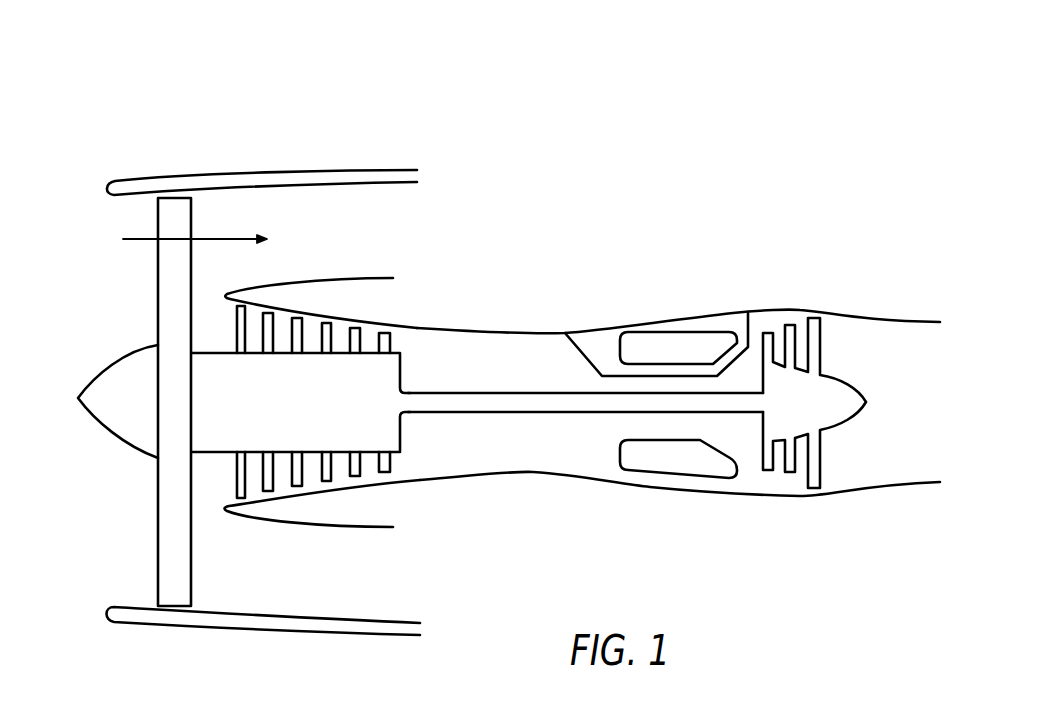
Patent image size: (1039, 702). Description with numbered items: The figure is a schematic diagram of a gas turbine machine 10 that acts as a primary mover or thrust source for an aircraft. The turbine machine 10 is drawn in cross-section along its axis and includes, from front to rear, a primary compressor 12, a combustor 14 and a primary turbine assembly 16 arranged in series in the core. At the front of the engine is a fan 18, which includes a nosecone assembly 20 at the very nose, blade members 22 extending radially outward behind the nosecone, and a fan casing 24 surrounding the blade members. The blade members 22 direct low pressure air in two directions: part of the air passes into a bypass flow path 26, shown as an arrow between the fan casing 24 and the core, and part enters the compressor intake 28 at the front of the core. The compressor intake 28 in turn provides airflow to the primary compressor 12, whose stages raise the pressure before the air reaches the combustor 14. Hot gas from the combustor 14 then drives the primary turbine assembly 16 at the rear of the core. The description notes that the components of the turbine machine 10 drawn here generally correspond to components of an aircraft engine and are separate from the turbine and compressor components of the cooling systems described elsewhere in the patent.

The gas turbine machine 10 is at (677, 203).
The primary compressor 12 is at (333, 390).
The combustor 14 is at (667, 347).
The primary turbine assembly 16 is at (805, 400).
The fan 18 is at (92, 271).
The nosecone assembly 20 is at (117, 422).
The blade members 22 is at (177, 587).
The fan casing 24 is at (268, 178).
The bypass flow path 26 is at (228, 239).
The compressor intake 28 is at (226, 333).